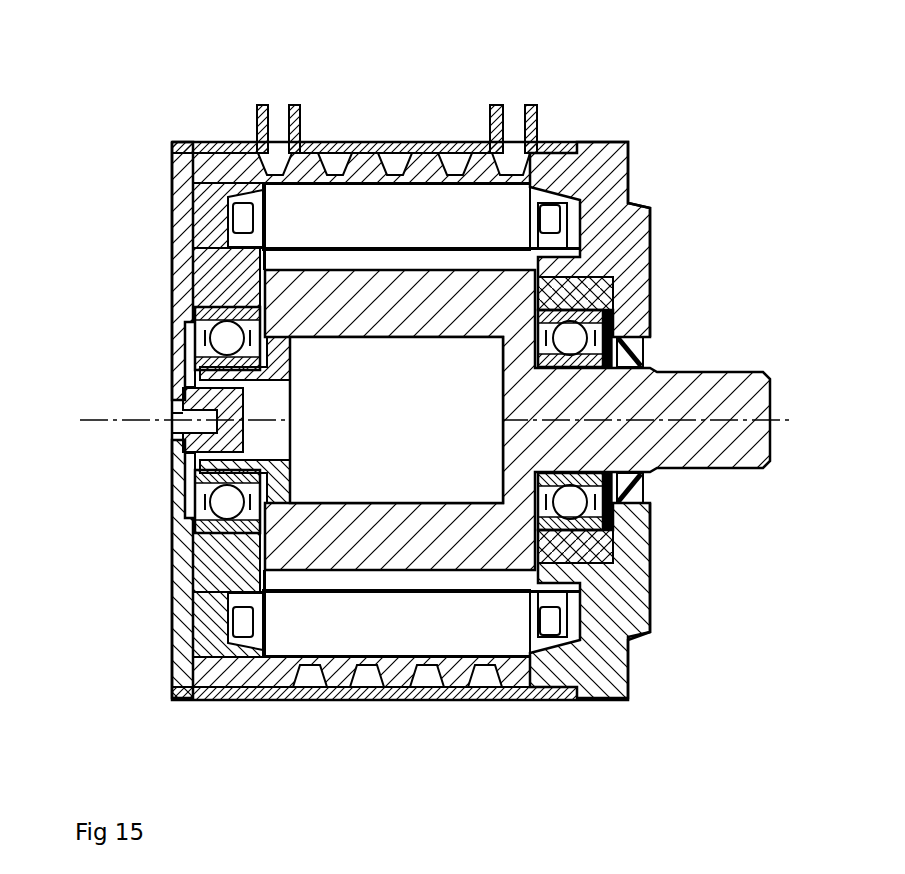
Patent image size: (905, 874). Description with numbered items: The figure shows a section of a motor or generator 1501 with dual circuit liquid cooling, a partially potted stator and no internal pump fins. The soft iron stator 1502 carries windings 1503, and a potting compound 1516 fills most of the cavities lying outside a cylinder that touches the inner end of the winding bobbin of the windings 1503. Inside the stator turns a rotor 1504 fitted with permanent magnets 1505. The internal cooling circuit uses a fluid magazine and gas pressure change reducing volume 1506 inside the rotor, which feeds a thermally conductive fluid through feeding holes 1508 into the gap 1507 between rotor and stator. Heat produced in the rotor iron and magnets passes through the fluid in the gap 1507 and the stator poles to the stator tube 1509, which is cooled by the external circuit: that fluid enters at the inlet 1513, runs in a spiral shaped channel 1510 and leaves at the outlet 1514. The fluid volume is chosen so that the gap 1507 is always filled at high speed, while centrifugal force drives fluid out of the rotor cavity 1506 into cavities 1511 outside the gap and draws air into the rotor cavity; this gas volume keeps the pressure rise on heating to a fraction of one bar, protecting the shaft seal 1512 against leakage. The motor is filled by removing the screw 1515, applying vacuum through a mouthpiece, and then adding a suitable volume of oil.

The motor or generator 1501 is at (390, 355).
The soft iron stator 1502 is at (465, 230).
The windings 1503 is at (606, 196).
The rotor 1504 is at (455, 548).
The permanent magnets 1505 is at (473, 574).
The fluid magazine and gas pressure change reducing volume 1506 is at (430, 497).
The gap between the rotor and stator 1507 is at (400, 250).
The feeding holes 1508 is at (283, 340).
The stator tube 1509 is at (200, 165).
The spiral shaped channel 1510 is at (280, 716).
The cavities 1511 is at (167, 250).
The shaft seal 1512 is at (645, 349).
The fluid inlet 1513 is at (278, 147).
The fluid outlet 1514 is at (517, 150).
The screw 1515 is at (167, 434).
The potting compound 1516 is at (167, 215).